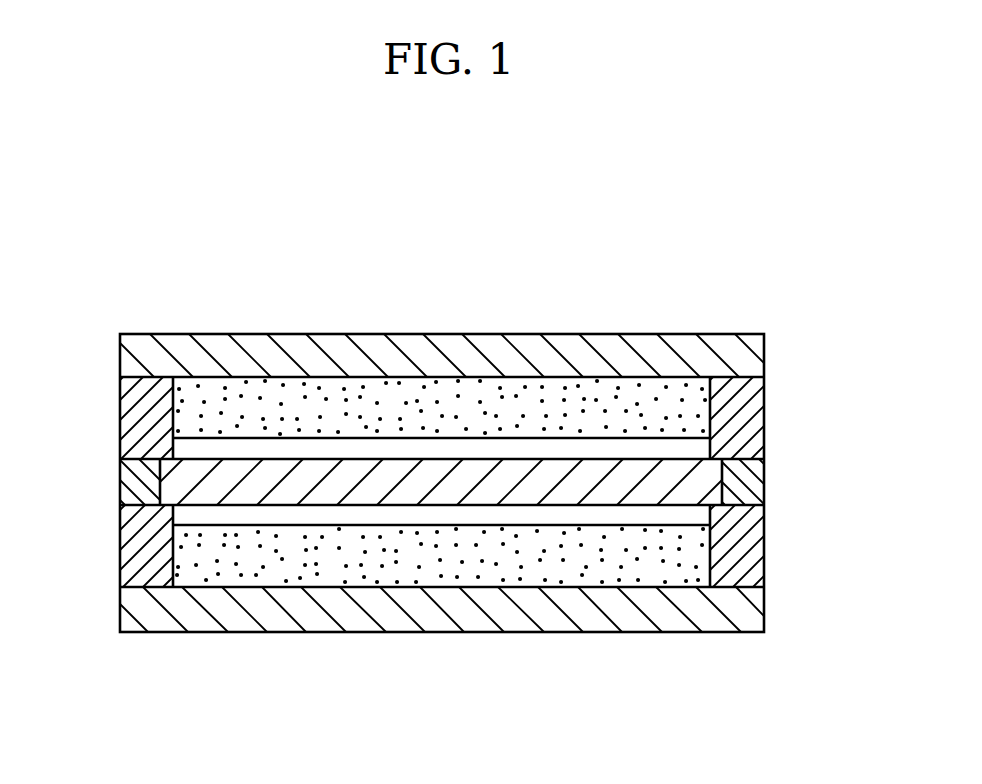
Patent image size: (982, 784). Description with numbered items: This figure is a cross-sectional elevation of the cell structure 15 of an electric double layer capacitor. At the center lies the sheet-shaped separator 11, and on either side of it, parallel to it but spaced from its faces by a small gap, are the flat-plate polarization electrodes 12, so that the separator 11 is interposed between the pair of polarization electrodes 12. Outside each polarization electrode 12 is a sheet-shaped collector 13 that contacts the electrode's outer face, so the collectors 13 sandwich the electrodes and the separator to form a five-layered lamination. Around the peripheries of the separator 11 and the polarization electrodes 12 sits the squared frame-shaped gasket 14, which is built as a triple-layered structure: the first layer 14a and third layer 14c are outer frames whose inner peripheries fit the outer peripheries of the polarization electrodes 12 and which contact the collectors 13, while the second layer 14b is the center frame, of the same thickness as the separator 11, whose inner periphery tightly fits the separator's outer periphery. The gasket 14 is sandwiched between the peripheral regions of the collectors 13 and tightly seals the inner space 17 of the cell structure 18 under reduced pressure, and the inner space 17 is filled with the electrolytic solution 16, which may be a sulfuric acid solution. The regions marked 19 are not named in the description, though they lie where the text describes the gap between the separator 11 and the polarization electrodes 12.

The separator 11 is at (443, 462).
The polarization electrodes 12 is at (305, 398).
The collector electrodes 13 is at (373, 355).
The gasket 14 is at (774, 398).
The first layer 14a is at (750, 427).
The second layer 14b is at (750, 484).
The third layer 14c is at (750, 560).
The cell structure 15 is at (824, 329).
The electrolytic solution 16 is at (162, 551).
The inner space 17 is at (168, 401).
The cell structure 18 is at (737, 377).
The space 19 is at (750, 455).